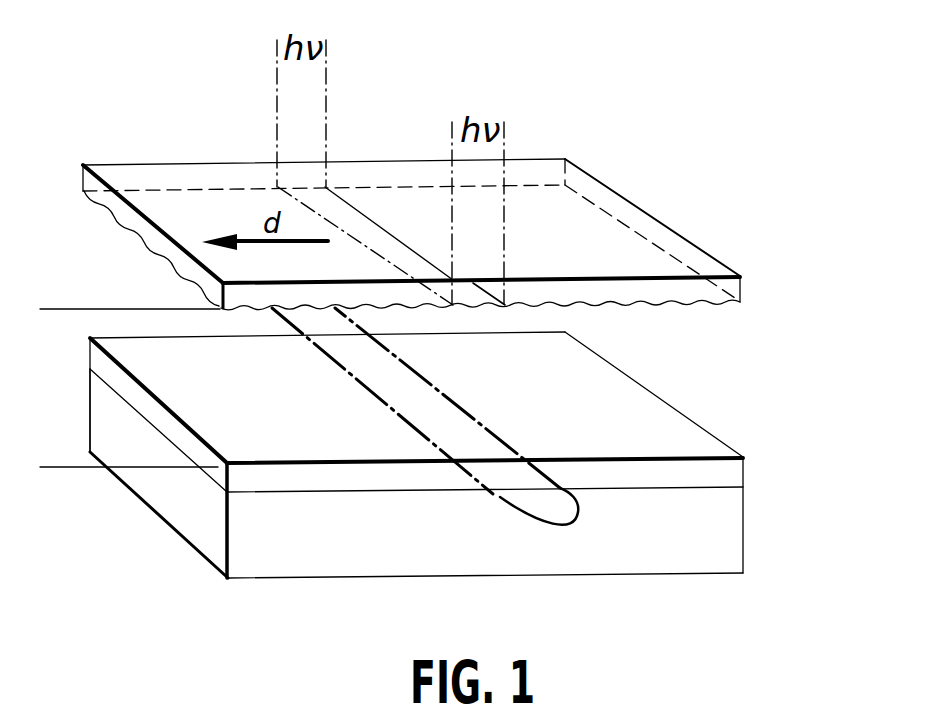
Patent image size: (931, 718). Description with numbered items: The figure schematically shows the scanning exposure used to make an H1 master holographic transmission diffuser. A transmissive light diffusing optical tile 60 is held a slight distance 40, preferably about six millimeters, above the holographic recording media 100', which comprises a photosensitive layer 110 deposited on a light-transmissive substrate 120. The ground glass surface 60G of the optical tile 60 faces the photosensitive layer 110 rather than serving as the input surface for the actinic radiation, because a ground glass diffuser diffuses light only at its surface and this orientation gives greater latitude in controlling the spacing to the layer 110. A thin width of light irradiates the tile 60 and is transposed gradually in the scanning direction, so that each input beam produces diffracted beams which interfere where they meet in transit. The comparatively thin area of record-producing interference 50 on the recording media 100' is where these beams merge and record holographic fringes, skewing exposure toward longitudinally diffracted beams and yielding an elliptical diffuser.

The light diffusing optical tile 60 is at (648, 214).
The ground glass surface 60G is at (693, 304).
The holographic recording media 100' is at (492, 455).
The photosensitive layer 110 is at (747, 473).
The light-transmissive substrate 120 is at (747, 538).
The area of record-producing interference 50 is at (537, 518).
The distance 40 is at (49, 309).